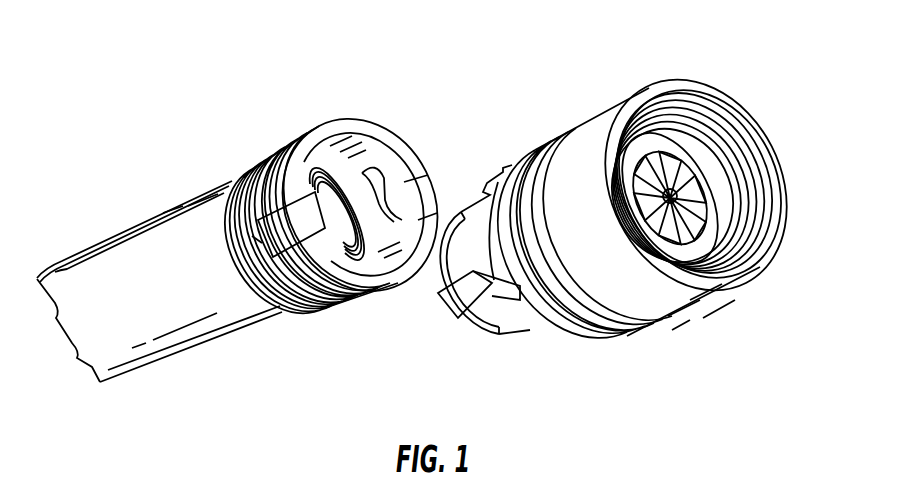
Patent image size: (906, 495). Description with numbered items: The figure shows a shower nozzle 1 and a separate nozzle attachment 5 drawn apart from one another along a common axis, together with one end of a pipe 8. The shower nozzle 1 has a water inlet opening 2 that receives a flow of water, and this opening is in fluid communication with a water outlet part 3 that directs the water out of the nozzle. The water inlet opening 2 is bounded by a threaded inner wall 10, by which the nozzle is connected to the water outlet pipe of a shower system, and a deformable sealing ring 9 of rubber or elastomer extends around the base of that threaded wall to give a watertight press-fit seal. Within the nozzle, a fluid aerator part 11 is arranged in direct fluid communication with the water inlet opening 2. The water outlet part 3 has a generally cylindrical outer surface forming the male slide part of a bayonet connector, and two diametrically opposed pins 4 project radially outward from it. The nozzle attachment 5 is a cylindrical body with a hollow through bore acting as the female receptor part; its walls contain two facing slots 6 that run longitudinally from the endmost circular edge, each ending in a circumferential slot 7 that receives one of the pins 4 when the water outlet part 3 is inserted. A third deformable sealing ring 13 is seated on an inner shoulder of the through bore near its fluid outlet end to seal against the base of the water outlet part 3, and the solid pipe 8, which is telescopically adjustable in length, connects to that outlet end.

The shower nozzle 1 is at (628, 347).
The water inlet opening 2 is at (762, 133).
The water outlet part 3 is at (506, 323).
The pins 4 is at (437, 310).
The nozzle attachment 5 is at (344, 106).
The slots 6 is at (433, 212).
The circumferential slot 7 is at (255, 240).
The solid pipe 8 is at (137, 352).
The deformable sealing ring 9 is at (733, 205).
The threaded inner wall 10 is at (738, 143).
The fluid aerator part 11 is at (707, 242).
The third deformable sealing ring 13 is at (384, 238).